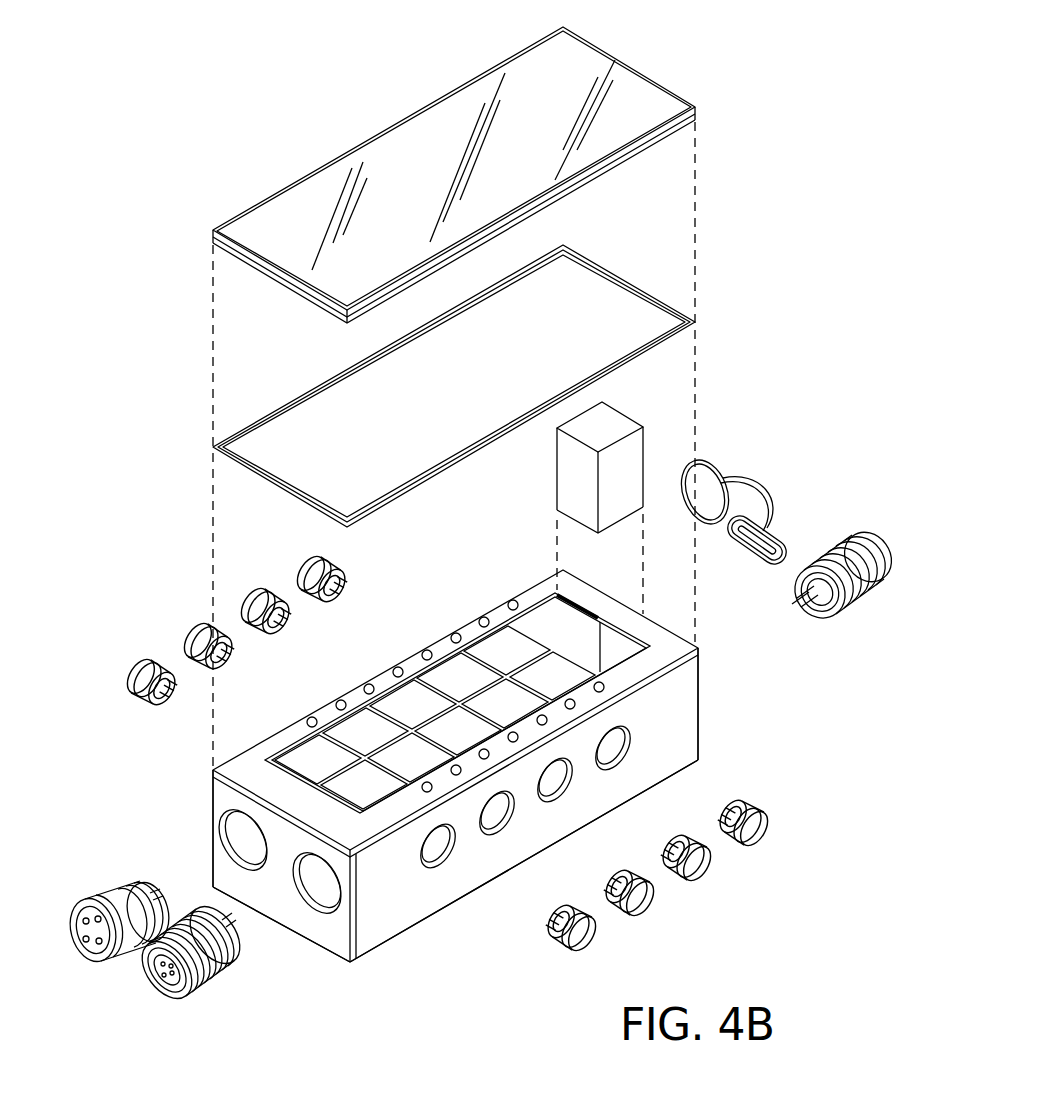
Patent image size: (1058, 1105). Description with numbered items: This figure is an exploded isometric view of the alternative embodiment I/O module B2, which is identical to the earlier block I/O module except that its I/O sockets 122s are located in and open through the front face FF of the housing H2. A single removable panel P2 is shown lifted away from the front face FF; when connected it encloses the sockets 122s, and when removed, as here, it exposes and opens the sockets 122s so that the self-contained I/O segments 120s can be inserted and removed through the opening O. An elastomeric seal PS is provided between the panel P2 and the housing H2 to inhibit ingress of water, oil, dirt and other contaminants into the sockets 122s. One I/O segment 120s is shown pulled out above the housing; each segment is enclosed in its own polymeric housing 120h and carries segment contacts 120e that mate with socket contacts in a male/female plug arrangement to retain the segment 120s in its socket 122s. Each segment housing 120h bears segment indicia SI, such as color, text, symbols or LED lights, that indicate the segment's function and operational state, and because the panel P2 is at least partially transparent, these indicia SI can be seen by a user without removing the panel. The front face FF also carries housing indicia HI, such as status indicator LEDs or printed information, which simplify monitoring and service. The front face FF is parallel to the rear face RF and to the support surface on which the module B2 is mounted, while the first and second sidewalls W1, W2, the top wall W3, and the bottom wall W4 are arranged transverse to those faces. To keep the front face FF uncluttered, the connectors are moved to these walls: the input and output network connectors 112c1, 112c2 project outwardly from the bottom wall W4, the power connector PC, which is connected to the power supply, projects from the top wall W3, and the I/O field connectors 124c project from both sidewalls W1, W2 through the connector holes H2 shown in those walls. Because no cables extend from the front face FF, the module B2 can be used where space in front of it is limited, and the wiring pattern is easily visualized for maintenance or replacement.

The removable panel P2 is at (258, 217).
The elastomeric seal PS is at (608, 267).
The segment indicia SI is at (509, 591).
The I/O segment housing 120h is at (515, 562).
The I/O segment 120s is at (557, 492).
The segment contacts 120e is at (575, 523).
The I/O module B2 is at (498, 690).
The front face FF is at (578, 587).
The I/O socket 122s is at (606, 637).
The opening O is at (634, 634).
The housing indicia HI is at (457, 634).
The first sidewall W1 is at (440, 893).
The second sidewall W2 is at (211, 830).
The top wall W3 is at (697, 742).
The bottom wall W4 is at (327, 933).
The housing H2 is at (283, 903).
The rear face RF is at (397, 940).
The power connector PC is at (850, 540).
The I/O field connectors 124c is at (195, 635).
The input network connector 112c1 is at (220, 977).
The output network connector 112c2 is at (95, 898).